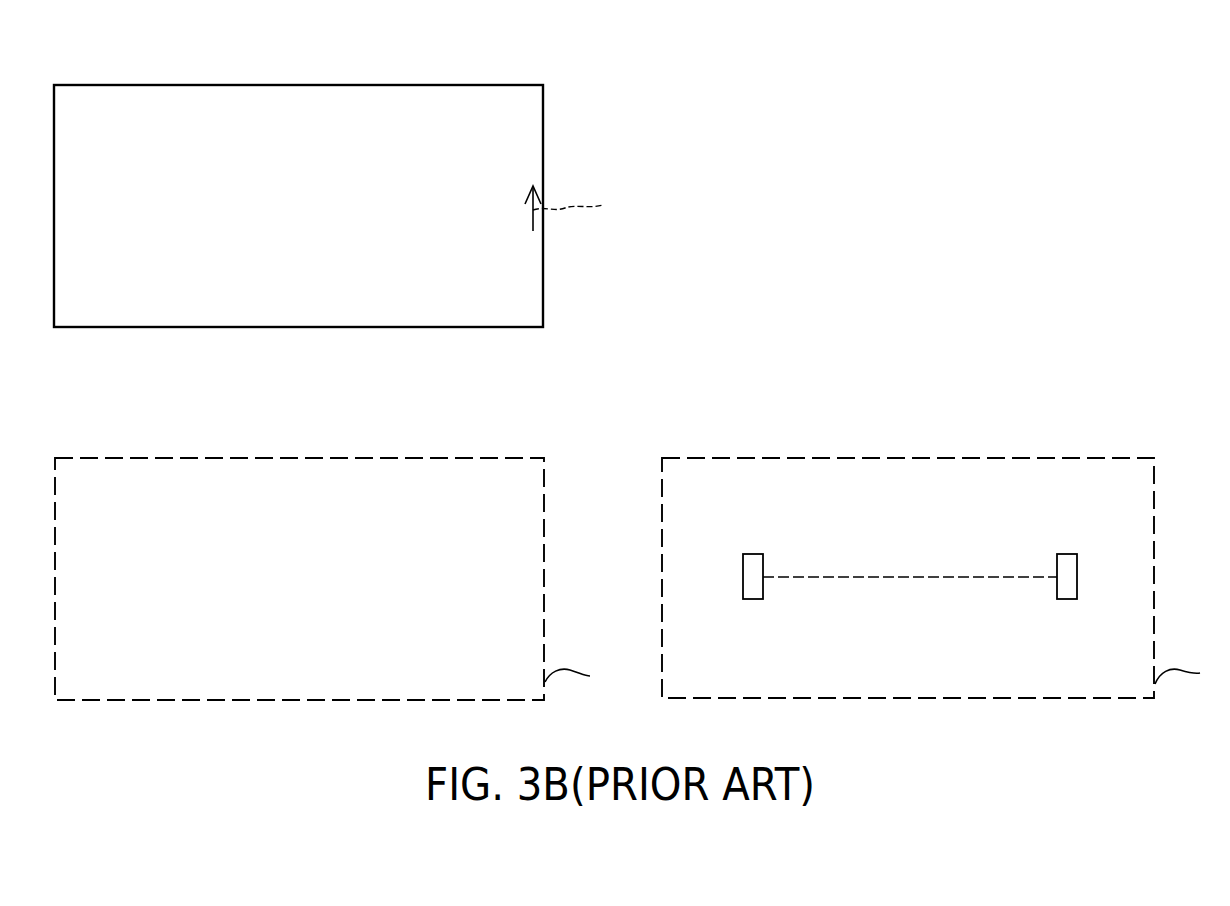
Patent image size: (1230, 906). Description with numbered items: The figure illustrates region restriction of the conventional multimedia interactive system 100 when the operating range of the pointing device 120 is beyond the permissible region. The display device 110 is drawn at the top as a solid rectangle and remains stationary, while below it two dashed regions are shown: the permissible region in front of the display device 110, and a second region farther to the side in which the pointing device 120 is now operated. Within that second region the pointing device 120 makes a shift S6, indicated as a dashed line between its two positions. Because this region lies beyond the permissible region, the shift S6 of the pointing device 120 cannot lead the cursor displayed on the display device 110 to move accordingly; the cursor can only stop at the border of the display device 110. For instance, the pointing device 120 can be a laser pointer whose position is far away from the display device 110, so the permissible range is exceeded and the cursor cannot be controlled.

The multimedia interactive system 100 is at (772, 66).
The display device 110 is at (543, 267).
The pointing device 120 is at (753, 600).
The shift S6 is at (910, 564).